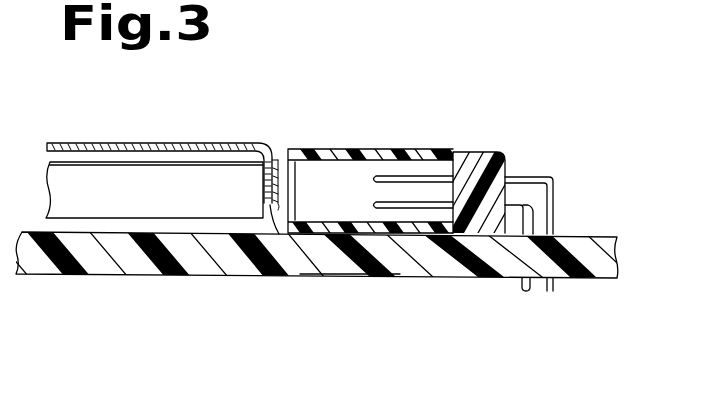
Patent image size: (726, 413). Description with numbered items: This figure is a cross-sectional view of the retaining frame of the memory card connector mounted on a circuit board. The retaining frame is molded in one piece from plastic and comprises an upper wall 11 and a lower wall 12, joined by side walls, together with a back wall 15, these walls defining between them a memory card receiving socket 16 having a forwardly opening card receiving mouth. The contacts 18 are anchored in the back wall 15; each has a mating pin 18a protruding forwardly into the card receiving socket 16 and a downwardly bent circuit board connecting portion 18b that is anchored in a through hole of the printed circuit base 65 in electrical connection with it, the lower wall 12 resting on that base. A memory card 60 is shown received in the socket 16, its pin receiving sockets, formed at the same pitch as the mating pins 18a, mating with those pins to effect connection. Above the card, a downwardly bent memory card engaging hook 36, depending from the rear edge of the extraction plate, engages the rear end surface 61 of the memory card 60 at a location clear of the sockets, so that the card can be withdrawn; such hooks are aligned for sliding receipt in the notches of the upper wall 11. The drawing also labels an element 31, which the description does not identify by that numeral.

The shield plate 31 is at (137, 141).
The memory card engaging hooks 36 is at (270, 172).
The upper wall 11 is at (357, 150).
The memory card receiving socket 16 is at (338, 209).
The mating pins 18a is at (440, 204).
The back wall 15 is at (487, 163).
The contacts 18 is at (553, 202).
The circuit board connecting portions 18b is at (528, 291).
The memory card 60 is at (183, 207).
The printed circuit base 65 is at (133, 262).
The rear end surface 61 is at (287, 230).
The lower wall 12 is at (393, 228).